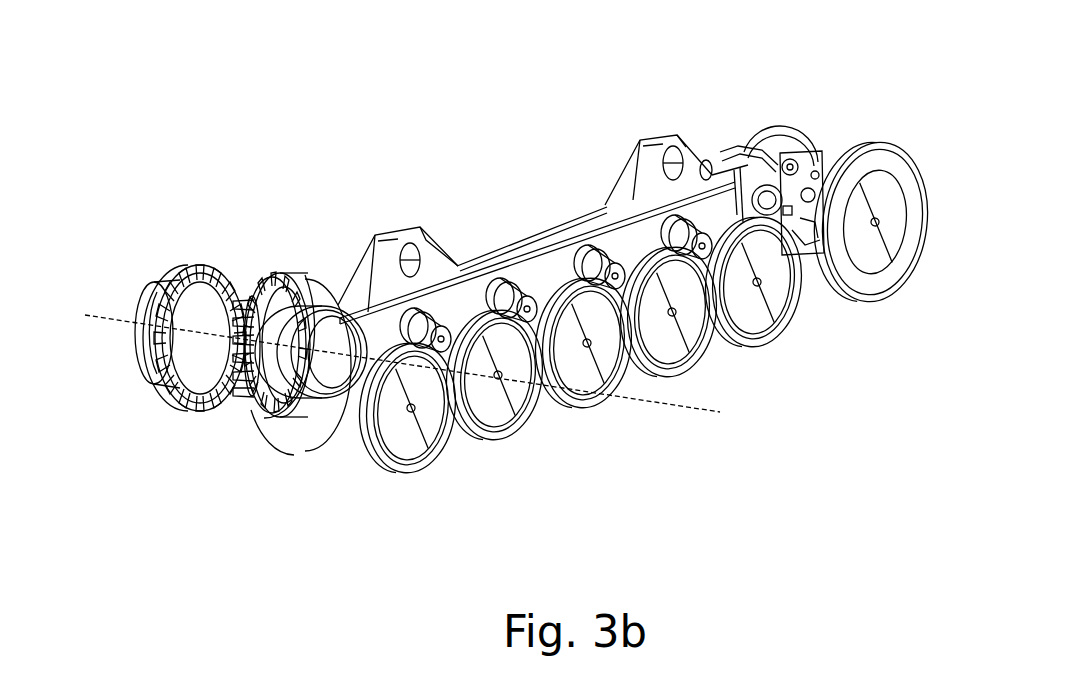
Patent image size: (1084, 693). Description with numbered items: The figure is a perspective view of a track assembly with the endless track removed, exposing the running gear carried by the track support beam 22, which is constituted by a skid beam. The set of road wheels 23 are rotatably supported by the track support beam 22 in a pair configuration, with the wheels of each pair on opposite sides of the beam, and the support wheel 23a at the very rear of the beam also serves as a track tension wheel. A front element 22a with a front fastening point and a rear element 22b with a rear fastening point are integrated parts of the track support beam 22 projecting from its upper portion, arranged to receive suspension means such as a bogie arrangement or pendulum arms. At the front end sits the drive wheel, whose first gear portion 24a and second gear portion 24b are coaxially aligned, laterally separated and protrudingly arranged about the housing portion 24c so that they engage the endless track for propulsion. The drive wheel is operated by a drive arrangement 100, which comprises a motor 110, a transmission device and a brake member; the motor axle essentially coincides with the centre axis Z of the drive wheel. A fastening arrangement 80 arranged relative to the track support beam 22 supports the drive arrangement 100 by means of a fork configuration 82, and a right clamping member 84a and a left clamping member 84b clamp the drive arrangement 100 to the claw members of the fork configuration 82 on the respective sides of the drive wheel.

The track support beam 22 is at (537, 226).
The front element 22a is at (395, 224).
The rear element 22b is at (654, 130).
The road wheel 23 is at (437, 462).
The tension wheel 23a is at (887, 304).
The first gear portion 24a is at (182, 412).
The second gear portion 24b is at (250, 408).
The housing portion 24c is at (216, 364).
The fastening arrangement 80 is at (350, 404).
The fork configuration 82 is at (360, 312).
The right clamping member 84a is at (150, 292).
The left clamping member 84b is at (290, 305).
The drive arrangement 100 is at (137, 299).
The motor 110 is at (133, 359).
The centre axis Z is at (112, 318).